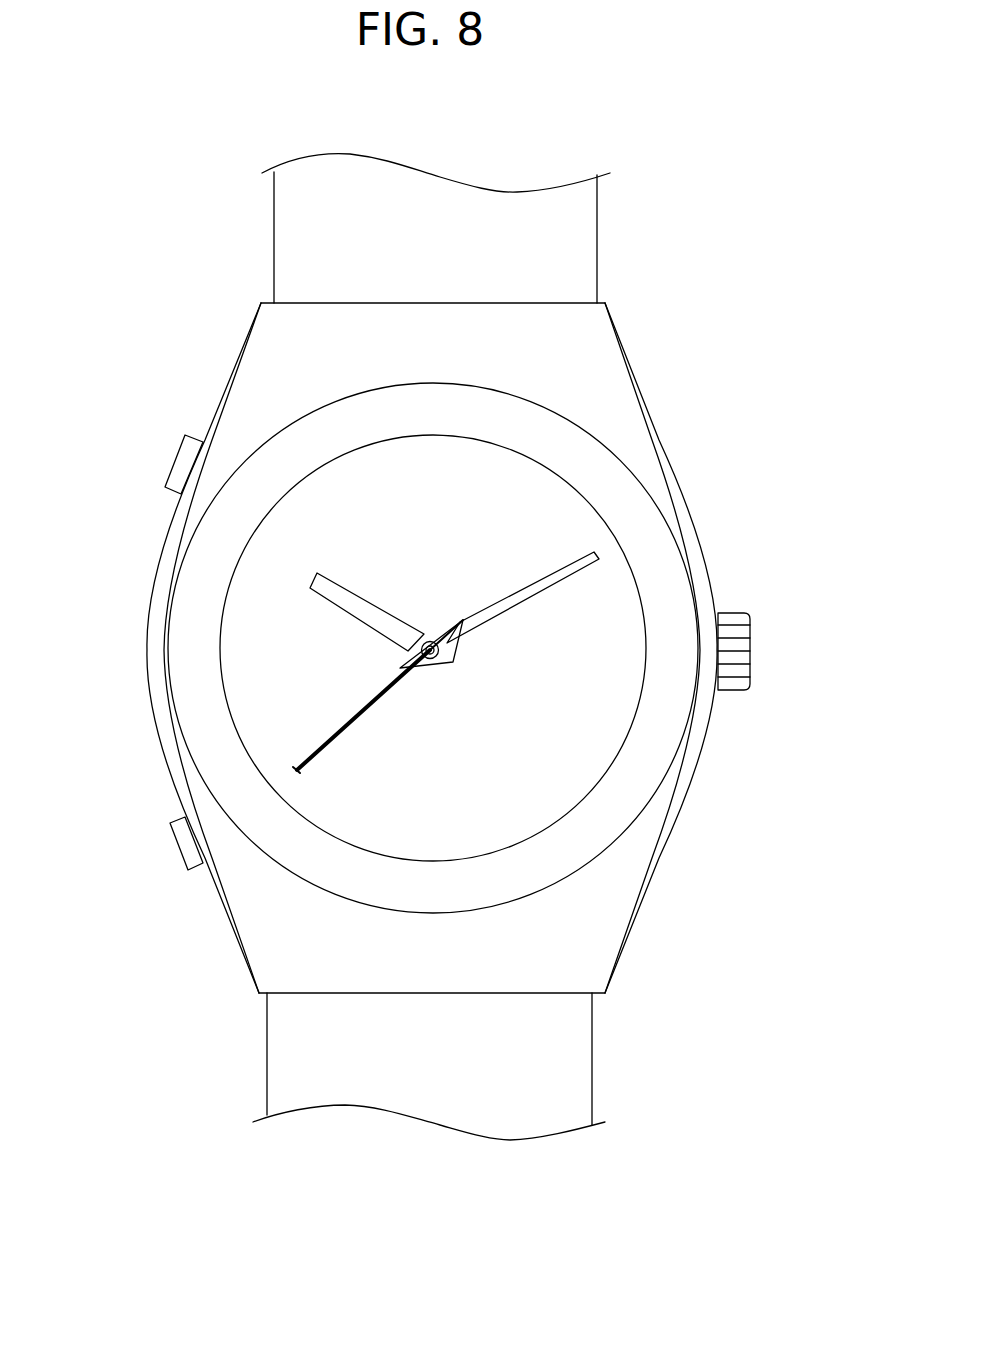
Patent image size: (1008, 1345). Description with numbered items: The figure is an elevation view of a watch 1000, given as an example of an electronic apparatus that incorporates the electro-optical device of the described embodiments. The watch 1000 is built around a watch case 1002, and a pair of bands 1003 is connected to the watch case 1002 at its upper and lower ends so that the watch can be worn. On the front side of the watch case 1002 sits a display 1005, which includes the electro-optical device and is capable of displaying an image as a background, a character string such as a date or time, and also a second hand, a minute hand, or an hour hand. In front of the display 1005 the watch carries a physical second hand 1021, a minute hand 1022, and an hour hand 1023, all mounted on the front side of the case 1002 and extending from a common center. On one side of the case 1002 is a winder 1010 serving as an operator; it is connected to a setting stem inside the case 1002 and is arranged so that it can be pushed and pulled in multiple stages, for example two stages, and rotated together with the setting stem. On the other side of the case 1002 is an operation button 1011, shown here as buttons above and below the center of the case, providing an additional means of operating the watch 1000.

The watch 1000 is at (766, 271).
The watch case 1002 is at (648, 403).
The bands 1003 is at (588, 242).
The display 1005 is at (607, 607).
The winder 1010 is at (750, 652).
The operation button 1011 is at (175, 455).
The second hand 1021 is at (293, 765).
The minute hand 1022 is at (583, 560).
The hour hand 1023 is at (315, 575).